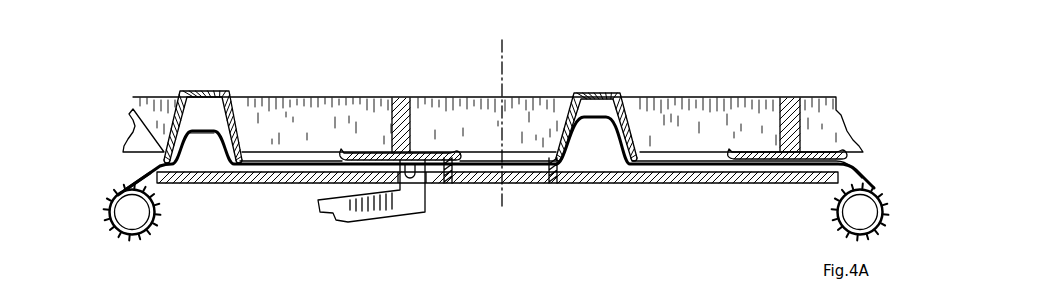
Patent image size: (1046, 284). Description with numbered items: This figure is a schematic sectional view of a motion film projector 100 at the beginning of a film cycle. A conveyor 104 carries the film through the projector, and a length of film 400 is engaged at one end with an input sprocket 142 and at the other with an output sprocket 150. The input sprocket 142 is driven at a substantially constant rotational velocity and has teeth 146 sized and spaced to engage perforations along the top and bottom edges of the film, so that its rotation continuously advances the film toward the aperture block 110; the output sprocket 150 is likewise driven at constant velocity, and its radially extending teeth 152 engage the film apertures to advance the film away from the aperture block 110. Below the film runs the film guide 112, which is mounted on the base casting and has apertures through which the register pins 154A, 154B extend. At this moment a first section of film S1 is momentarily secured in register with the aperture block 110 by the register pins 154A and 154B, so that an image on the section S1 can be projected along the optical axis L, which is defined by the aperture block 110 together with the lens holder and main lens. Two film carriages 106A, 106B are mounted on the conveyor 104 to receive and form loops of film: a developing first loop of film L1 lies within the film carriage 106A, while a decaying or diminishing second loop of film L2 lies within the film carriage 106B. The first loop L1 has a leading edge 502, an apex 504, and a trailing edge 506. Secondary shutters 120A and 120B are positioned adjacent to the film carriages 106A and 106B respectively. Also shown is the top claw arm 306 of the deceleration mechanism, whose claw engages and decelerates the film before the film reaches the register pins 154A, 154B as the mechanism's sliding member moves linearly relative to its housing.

The motion film projector 100 is at (116, 91).
The conveyor 104 is at (152, 112).
The film carriage 106A is at (196, 90).
The film carriage 106B is at (591, 92).
The aperture block 110 is at (516, 182).
The film guide 112 is at (697, 184).
The secondary shutter 120A is at (403, 97).
The secondary shutter 120B is at (783, 98).
The input sprocket 142 is at (106, 217).
The teeth 146 is at (160, 214).
The output sprocket 150 is at (832, 208).
The teeth 152 is at (843, 226).
The register pin 154A is at (457, 174).
The register pin 154B is at (533, 172).
The top claw arm 306 is at (368, 221).
The length of film 400 is at (143, 172).
The leading edge 502 is at (218, 163).
The apex 504 is at (222, 144).
The trailing edge 506 is at (163, 159).
The optical axis L is at (502, 111).
The first loop of film L1 is at (213, 120).
The second loop of film L2 is at (593, 118).
The first section of film S1 is at (506, 157).